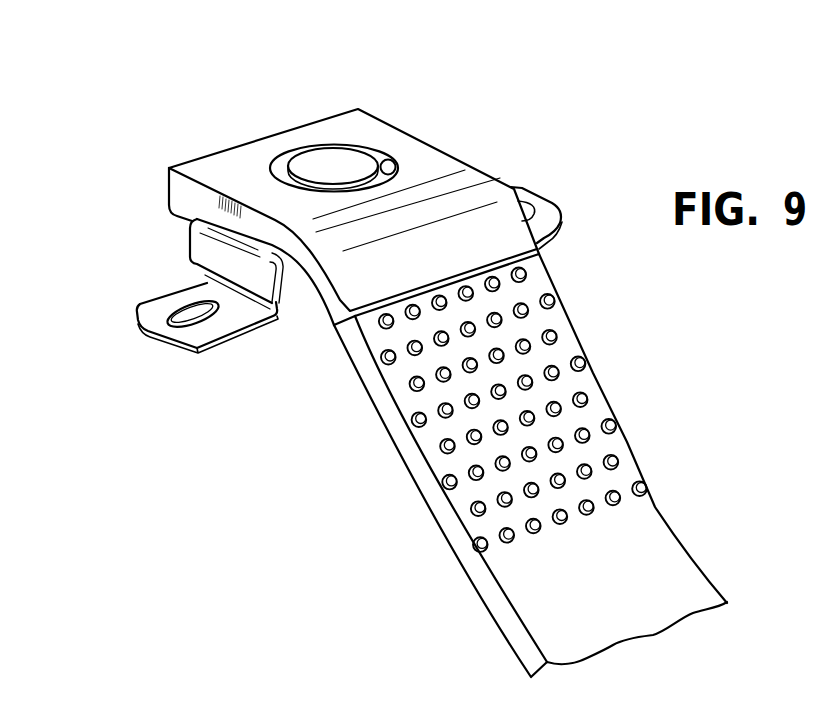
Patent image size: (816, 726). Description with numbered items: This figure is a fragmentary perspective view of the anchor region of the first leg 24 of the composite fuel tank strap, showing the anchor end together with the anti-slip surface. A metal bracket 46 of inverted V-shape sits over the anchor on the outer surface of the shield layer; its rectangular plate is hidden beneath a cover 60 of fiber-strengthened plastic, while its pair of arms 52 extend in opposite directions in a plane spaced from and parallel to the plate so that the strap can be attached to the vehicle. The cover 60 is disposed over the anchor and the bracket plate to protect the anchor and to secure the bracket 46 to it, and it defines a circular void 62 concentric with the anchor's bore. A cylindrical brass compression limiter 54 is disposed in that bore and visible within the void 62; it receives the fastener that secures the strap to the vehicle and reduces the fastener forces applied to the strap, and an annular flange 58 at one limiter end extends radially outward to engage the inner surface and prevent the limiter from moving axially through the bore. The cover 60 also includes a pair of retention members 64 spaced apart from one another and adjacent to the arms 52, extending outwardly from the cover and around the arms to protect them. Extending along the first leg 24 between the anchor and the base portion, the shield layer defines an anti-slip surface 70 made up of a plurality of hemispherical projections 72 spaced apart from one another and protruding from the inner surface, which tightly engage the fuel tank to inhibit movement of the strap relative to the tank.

The first leg 24 is at (457, 532).
The bracket 46 is at (128, 301).
The arms 52 is at (182, 341).
The compression limiter 54 is at (348, 168).
The annular flange 58 is at (308, 148).
The cover 60 is at (175, 158).
The void 62 is at (396, 167).
The retention members 64 is at (207, 252).
The anti-slip surface 70 is at (398, 405).
The projections 72 is at (547, 302).